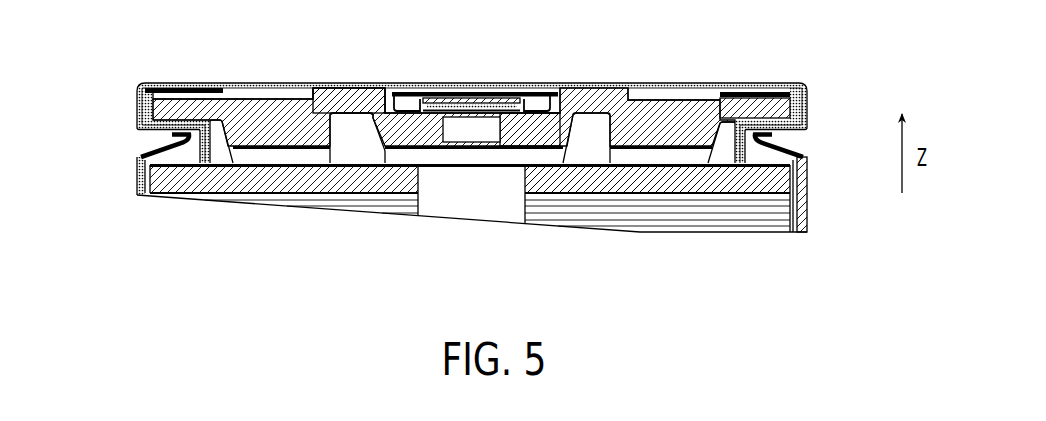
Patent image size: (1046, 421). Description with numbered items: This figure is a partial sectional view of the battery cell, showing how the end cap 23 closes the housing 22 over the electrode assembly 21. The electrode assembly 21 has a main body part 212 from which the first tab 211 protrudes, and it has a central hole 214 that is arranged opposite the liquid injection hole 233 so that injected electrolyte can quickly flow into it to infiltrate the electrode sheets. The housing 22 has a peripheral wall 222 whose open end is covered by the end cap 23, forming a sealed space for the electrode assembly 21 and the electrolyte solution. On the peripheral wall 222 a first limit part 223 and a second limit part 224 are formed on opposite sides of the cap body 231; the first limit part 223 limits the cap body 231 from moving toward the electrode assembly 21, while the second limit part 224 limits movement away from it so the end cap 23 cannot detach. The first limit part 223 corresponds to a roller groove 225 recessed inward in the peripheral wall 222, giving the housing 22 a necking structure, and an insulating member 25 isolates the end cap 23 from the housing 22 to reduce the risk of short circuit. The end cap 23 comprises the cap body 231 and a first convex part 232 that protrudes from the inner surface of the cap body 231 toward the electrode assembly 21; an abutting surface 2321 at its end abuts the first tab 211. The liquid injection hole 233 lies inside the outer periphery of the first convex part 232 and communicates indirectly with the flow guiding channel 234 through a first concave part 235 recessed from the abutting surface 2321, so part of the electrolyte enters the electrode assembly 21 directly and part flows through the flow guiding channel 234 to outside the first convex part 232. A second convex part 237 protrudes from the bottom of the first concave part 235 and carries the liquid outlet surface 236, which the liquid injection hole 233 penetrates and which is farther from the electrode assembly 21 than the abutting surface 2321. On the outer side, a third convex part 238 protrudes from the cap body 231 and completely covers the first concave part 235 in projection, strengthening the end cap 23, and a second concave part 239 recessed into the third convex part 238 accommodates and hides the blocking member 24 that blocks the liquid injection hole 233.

The electrode assembly 21 is at (430, 212).
The first tab 211 is at (723, 174).
The main body part 212 is at (275, 196).
The central hole 214 is at (510, 212).
The housing 22 is at (814, 209).
The peripheral wall 222 is at (137, 182).
The first limit part 223 is at (156, 149).
The second limit part 224 is at (170, 90).
The roller groove 225 is at (803, 143).
The end cap 23 is at (652, 88).
The cap body 231 is at (760, 107).
The first convex part 232 is at (630, 121).
The abutting surface 2321 is at (255, 169).
The liquid injection hole 233 is at (457, 130).
The flow guiding channel 234 is at (300, 158).
The first concave part 235 is at (353, 138).
The liquid outlet surface 236 is at (523, 148).
The second convex part 237 is at (553, 118).
The third convex part 238 is at (340, 93).
The second concave part 239 is at (403, 95).
The blocking member 24 is at (500, 97).
The insulating member 25 is at (148, 113).